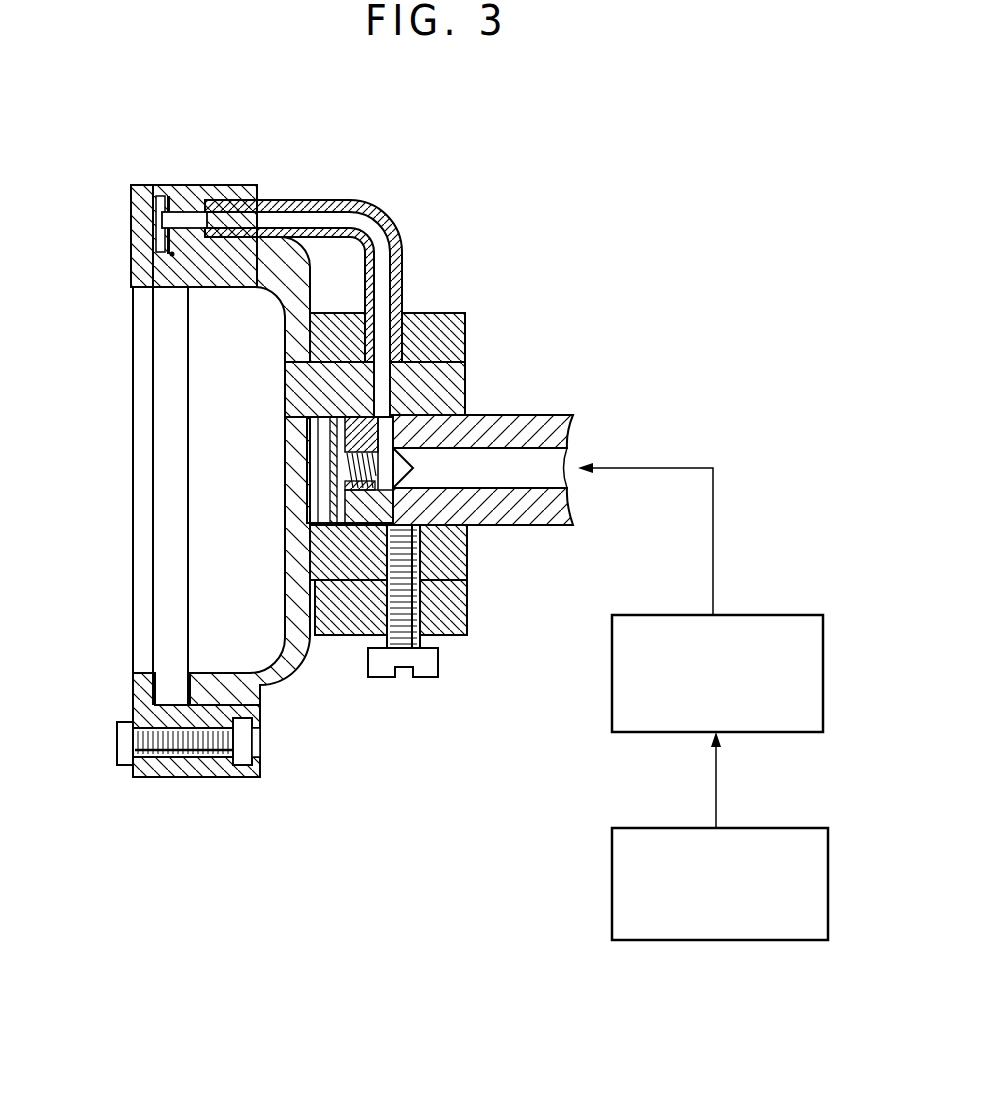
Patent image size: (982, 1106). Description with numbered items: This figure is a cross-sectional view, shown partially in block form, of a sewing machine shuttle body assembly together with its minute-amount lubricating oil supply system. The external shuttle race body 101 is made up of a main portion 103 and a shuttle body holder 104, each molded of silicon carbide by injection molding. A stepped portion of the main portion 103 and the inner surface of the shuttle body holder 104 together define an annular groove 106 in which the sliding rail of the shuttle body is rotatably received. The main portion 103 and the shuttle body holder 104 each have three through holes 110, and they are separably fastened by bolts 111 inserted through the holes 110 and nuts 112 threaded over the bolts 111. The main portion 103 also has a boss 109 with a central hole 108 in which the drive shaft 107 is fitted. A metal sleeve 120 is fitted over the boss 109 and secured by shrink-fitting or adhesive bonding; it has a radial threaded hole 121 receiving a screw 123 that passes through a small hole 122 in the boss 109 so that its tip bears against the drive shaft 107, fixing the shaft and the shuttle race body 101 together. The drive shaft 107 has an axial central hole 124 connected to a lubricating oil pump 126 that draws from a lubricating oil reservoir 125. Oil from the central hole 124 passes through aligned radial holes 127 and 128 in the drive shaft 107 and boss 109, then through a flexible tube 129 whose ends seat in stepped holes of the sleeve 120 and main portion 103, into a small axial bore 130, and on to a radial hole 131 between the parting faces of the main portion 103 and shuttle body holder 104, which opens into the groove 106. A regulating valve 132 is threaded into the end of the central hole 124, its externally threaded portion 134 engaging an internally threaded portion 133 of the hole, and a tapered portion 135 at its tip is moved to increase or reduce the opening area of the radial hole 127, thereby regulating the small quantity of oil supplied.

The shuttle race body 101 is at (237, 793).
The main portion 103 is at (273, 683).
The shuttle body holder 104 is at (147, 697).
The annular groove 106 is at (172, 250).
The drive shaft 107 is at (545, 508).
The central hole 108 is at (467, 418).
The boss 109 is at (453, 558).
The through holes 110 is at (190, 760).
The bolts 111 is at (128, 747).
The nuts 112 is at (260, 777).
The sleeve 120 is at (450, 332).
The threaded hole 121 is at (423, 617).
The small hole 122 is at (440, 566).
The screw 123 is at (420, 667).
The central hole 124 is at (578, 456).
The lubricating oil reservoir 125 is at (818, 850).
The lubricating oil pump 126 is at (812, 668).
The radial hole 127 is at (378, 426).
The radial hole 128 is at (380, 379).
The flexible tube 129 is at (388, 241).
The small axial bore 130 is at (195, 218).
The radial hole 131 is at (153, 236).
The regulating valve 132 is at (313, 500).
The internally threaded portion 133 is at (370, 485).
The externally threaded portion 134 is at (345, 463).
The tapered portion 135 is at (417, 472).